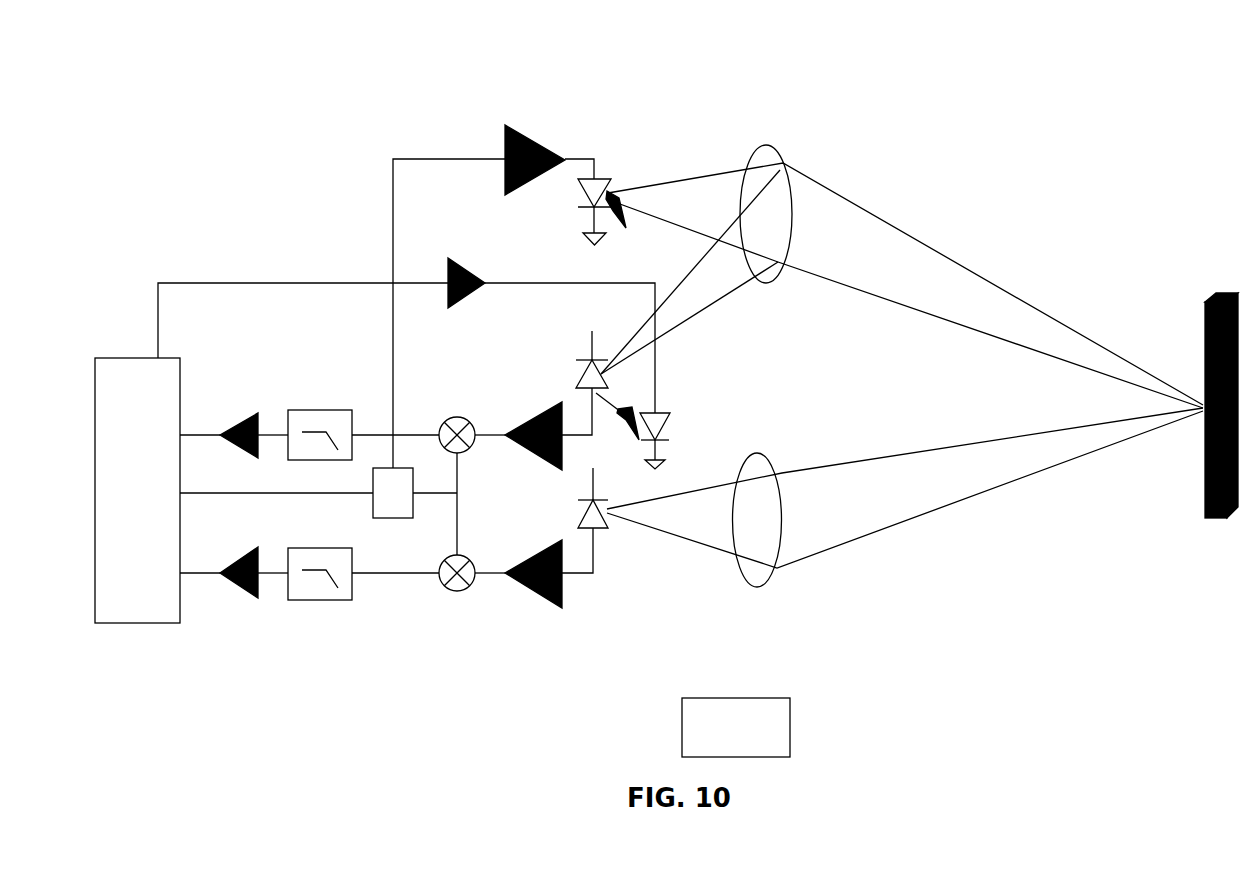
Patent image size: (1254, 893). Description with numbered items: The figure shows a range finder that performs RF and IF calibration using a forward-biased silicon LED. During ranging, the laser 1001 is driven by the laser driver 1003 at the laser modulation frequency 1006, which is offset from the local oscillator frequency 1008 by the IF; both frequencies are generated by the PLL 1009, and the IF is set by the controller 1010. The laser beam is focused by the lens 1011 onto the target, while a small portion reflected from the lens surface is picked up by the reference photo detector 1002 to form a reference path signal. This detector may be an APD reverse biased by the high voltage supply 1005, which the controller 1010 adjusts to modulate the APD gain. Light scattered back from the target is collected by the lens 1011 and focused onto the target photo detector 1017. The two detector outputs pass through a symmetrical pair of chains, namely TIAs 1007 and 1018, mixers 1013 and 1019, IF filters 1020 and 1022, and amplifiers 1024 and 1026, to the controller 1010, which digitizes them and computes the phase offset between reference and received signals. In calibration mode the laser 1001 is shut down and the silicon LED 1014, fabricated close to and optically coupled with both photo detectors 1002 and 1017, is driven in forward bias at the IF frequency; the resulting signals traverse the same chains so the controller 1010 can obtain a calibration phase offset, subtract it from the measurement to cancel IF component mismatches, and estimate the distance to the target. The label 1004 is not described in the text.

The laser 1001 is at (611, 167).
The reference photo detector 1002 is at (573, 359).
The laser driver 1003 is at (533, 135).
The emitter element 1004 is at (735, 698).
The high voltage supply 1005 is at (736, 727).
The laser modulation frequency 1006 is at (449, 301).
The TIA 1007 is at (526, 442).
The local oscillator frequency 1008 is at (437, 504).
The PLL 1009 is at (393, 493).
The controller 1010 is at (137, 490).
The lens 1011 is at (769, 529).
The mixer 1013 is at (458, 423).
The silicon LED 1014 is at (657, 431).
The target photo detector 1017 is at (574, 498).
The TIA 1018 is at (533, 583).
The mixer 1019 is at (461, 587).
The IF filter 1020 is at (292, 409).
The IF filter 1022 is at (292, 547).
The amplifier 1024 is at (256, 415).
The amplifier 1026 is at (256, 549).